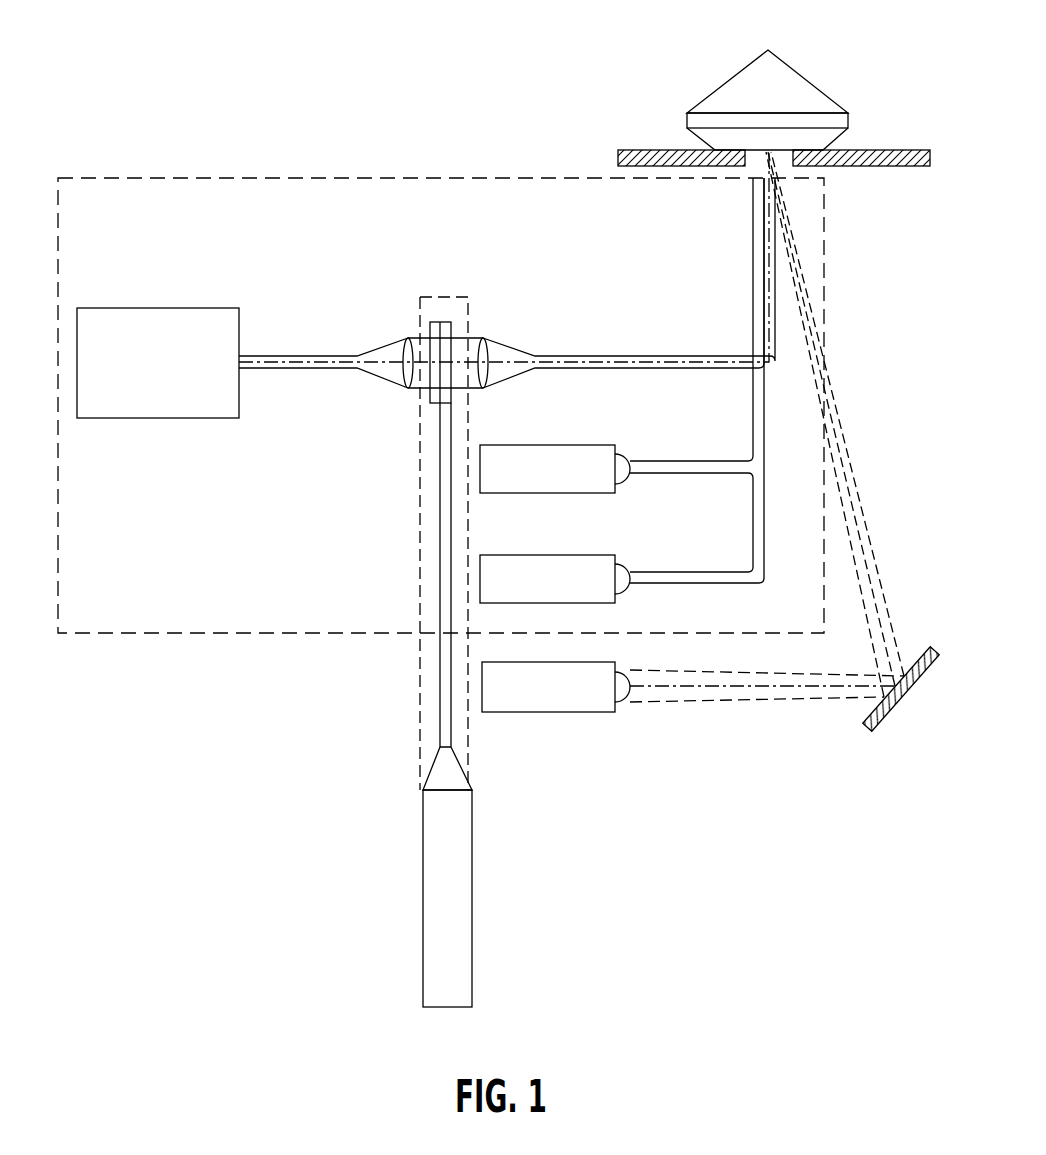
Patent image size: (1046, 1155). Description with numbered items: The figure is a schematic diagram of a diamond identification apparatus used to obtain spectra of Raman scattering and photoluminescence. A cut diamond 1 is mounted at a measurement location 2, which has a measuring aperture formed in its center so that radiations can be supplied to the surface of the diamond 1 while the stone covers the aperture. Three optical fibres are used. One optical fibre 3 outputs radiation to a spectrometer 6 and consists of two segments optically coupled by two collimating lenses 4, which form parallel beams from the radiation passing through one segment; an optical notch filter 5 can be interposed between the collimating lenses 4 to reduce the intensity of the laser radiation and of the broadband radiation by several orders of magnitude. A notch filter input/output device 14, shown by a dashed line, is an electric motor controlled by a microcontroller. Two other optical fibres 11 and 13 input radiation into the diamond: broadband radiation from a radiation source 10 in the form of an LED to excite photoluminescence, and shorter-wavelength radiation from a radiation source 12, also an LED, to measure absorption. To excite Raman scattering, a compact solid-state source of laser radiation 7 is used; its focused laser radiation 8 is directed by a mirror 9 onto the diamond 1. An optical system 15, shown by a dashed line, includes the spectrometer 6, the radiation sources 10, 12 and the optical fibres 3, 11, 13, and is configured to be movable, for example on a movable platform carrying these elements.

The diamond 1 is at (718, 89).
The measurement location 2 is at (870, 150).
The optical fibre 3 is at (313, 356).
The collimating lenses 4 is at (490, 340).
The optical notch filter 5 is at (430, 403).
The spectrometer 6 is at (167, 308).
The source of laser radiation 7 is at (577, 712).
The focused laser radiation 8 is at (718, 700).
The mirror 9 is at (880, 730).
The radiation source 10 is at (597, 555).
The optical fibre 11 is at (693, 584).
The radiation source 12 is at (597, 445).
The optical fibre 13 is at (677, 475).
The notch filter input/output device 14 is at (472, 955).
The optical system 15 is at (268, 178).